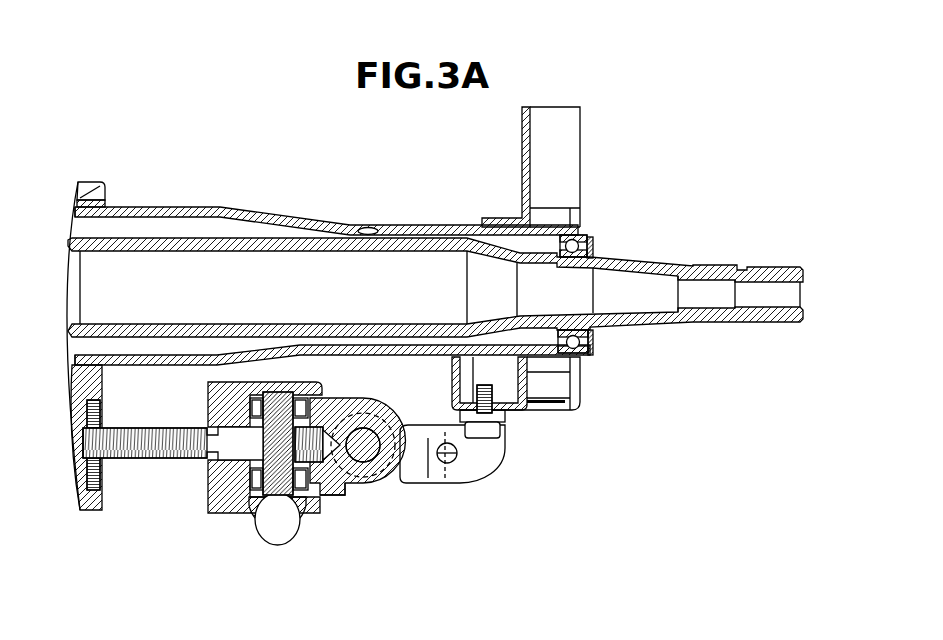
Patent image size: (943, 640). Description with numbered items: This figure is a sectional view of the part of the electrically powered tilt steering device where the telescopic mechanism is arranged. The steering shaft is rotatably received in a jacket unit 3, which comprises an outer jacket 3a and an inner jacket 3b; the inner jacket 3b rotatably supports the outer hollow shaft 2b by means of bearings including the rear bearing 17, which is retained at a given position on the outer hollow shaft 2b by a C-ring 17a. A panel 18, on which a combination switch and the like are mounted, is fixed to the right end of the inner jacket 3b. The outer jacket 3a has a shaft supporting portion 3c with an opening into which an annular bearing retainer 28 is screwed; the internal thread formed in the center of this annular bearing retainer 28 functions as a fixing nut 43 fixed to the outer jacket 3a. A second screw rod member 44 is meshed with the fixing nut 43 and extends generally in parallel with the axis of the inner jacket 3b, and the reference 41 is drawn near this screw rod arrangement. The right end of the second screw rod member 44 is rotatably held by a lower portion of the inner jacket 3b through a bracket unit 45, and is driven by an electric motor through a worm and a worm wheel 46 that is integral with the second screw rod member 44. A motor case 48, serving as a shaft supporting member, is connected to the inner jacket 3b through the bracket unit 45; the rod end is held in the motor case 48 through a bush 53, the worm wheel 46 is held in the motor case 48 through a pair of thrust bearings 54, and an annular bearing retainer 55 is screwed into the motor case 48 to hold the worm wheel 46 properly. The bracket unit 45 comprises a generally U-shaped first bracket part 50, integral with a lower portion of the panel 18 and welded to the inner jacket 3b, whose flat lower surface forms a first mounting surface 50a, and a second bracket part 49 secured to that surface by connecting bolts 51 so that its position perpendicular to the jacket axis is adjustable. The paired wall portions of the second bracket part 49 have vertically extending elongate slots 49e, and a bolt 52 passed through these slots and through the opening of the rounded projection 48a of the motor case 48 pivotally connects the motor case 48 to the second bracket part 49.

The jacket unit 3 is at (172, 128).
The outer jacket 3a is at (90, 188).
The inner jacket 3b is at (158, 207).
The shaft supporting portion 3c is at (78, 510).
The outer hollow shaft 2b is at (190, 238).
The panel 18 is at (570, 145).
The rear bearing 17 is at (588, 232).
The C-ring 17a is at (593, 250).
The worm wheel 46 is at (278, 407).
The second screw rod member 44 is at (148, 448).
The annular bearing retainer 28 is at (95, 510).
The fixing nut 43 is at (122, 474).
The adjusting mechanism 41 is at (175, 518).
The annular bearing retainer 55 is at (228, 497).
The thrust bearings 54 is at (252, 495).
The bush 53 is at (312, 465).
The motor case 48 is at (320, 500).
The rounded projection 48a is at (343, 482).
The bolt 52 is at (360, 437).
The elongate slots 49e is at (385, 410).
The bracket unit 45 is at (493, 473).
The second bracket part 49 is at (467, 458).
The first bracket part 50 is at (448, 386).
The first mounting surface 50a is at (511, 410).
The connecting bolts 51 is at (503, 467).